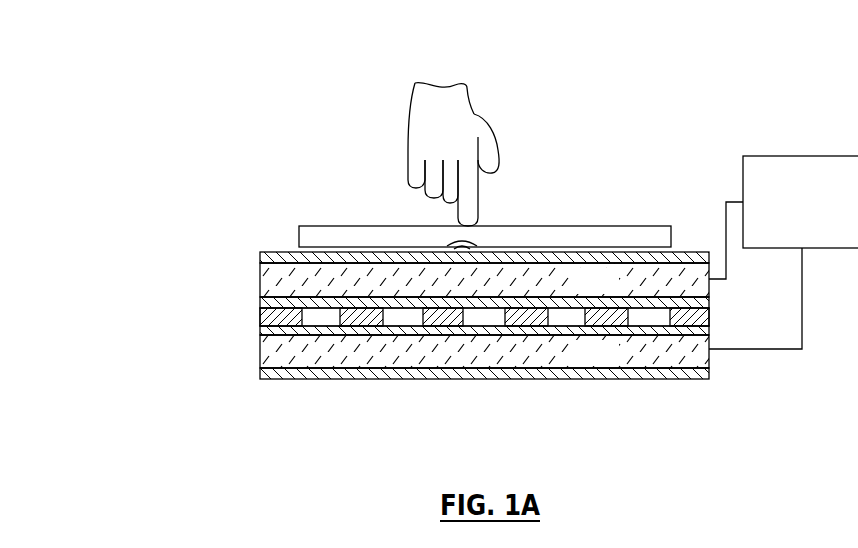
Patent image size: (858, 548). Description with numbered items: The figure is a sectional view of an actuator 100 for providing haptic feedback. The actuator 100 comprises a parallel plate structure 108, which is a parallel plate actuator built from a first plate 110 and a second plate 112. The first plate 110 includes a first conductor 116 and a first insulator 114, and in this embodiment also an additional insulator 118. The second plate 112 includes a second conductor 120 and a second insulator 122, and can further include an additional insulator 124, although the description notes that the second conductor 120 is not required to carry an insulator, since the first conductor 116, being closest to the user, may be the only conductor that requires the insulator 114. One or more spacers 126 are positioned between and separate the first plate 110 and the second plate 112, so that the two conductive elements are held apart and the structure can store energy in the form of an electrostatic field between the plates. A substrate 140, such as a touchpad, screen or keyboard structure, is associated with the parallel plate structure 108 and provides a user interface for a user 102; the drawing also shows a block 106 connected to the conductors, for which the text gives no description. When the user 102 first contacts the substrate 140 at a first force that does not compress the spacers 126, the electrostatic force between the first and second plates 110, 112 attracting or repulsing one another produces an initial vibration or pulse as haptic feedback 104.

The actuator 100 is at (263, 152).
The user 102 is at (470, 122).
The haptic feedback 104 is at (455, 243).
The controller 106 is at (825, 208).
The parallel plate structure 108 is at (160, 247).
The first plate 110 is at (234, 248).
The second plate 112 is at (234, 323).
The first insulator 114 is at (318, 302).
The first conductor 116 is at (578, 291).
The additional insulator 118 is at (606, 258).
The second conductor 120 is at (578, 363).
The second insulator 122 is at (407, 330).
The additional insulator 124 is at (665, 380).
The spacers 126 is at (520, 316).
The substrate 140 is at (557, 235).